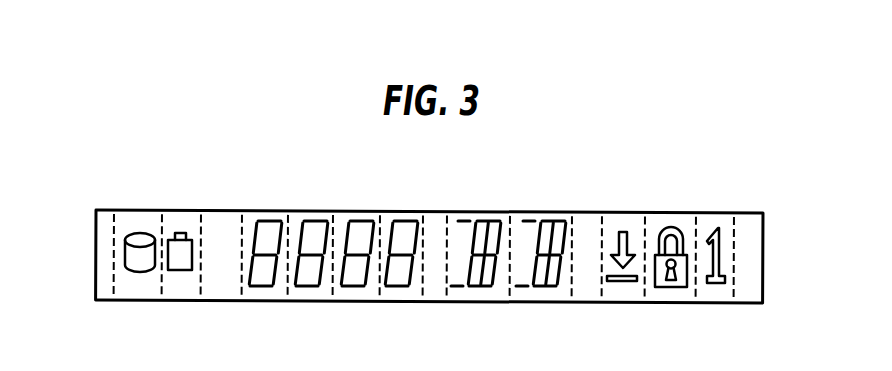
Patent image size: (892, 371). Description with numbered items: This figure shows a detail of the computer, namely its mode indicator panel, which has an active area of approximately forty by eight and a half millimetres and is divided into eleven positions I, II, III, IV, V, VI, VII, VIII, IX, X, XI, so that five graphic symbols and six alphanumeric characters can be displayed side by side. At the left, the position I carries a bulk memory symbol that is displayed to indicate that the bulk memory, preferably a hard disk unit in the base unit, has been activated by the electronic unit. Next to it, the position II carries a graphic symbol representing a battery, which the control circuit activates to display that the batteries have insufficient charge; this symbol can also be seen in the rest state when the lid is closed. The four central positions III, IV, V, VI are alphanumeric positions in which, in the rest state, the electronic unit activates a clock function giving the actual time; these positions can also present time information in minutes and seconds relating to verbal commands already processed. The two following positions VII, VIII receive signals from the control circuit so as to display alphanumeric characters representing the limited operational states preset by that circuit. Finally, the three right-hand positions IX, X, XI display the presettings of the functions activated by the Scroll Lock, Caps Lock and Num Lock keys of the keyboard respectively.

The bulk memory symbol position I is at (148, 290).
The battery symbol position II is at (186, 217).
The first alphanumeric character position III is at (272, 290).
The second alphanumeric character position IV is at (308, 217).
The third alphanumeric character position V is at (360, 290).
The fourth alphanumeric character position VI is at (396, 217).
The operational state character position VII is at (485, 290).
The operational state character position VIII is at (538, 217).
The Scroll Lock indicator position IX is at (624, 292).
The Caps Lock indicator position X is at (678, 217).
The Num Lock indicator position XI is at (714, 292).